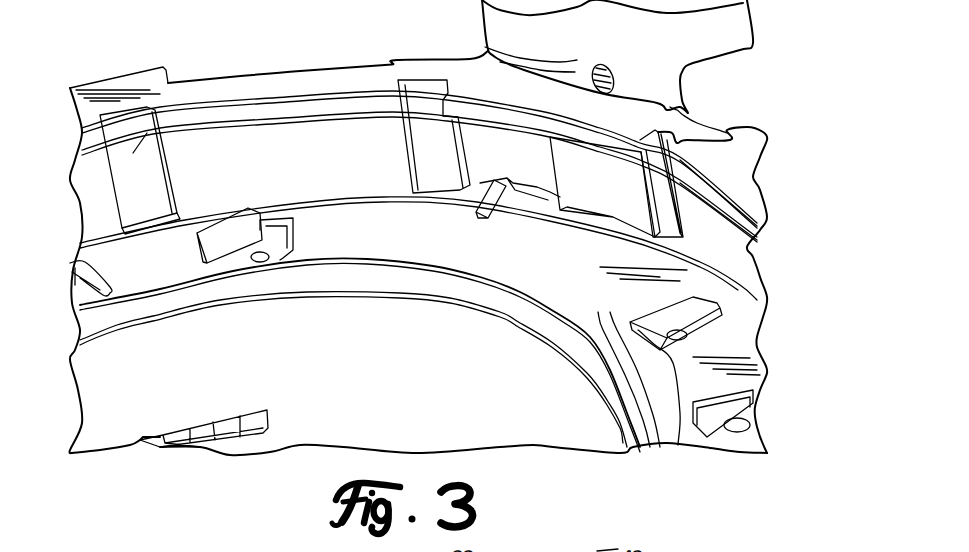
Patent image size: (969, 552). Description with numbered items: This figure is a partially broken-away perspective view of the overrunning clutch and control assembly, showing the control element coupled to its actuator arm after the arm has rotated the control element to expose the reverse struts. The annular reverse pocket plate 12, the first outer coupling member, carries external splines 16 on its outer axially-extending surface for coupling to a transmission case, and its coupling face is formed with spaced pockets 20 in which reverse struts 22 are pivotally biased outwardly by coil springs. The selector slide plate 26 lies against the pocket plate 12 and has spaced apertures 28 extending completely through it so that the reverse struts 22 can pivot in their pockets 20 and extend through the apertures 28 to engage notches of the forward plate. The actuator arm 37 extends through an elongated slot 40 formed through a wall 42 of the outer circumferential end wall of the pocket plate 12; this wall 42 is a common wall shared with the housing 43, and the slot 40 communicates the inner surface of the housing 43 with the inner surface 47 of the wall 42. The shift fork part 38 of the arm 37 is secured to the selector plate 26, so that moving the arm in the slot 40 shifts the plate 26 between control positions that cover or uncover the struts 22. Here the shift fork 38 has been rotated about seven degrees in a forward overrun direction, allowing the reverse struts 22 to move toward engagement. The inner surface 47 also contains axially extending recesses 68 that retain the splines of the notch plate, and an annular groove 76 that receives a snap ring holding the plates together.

The reverse pocket plate 12 is at (312, 61).
The external splines 16 is at (117, 70).
The pockets 20 is at (273, 250).
The reverse struts 22 is at (240, 262).
The selector slide plate 26 is at (416, 270).
The apertures 28 is at (305, 263).
The actuator arm 37 is at (470, 204).
The shift fork part 38 is at (497, 213).
The elongated slot 40 is at (556, 206).
The wall 42 is at (487, 127).
The housing 43 is at (744, 56).
The inner surface 47 is at (517, 143).
The axially extending recesses 68 is at (163, 90).
The annular groove 76 is at (715, 199).